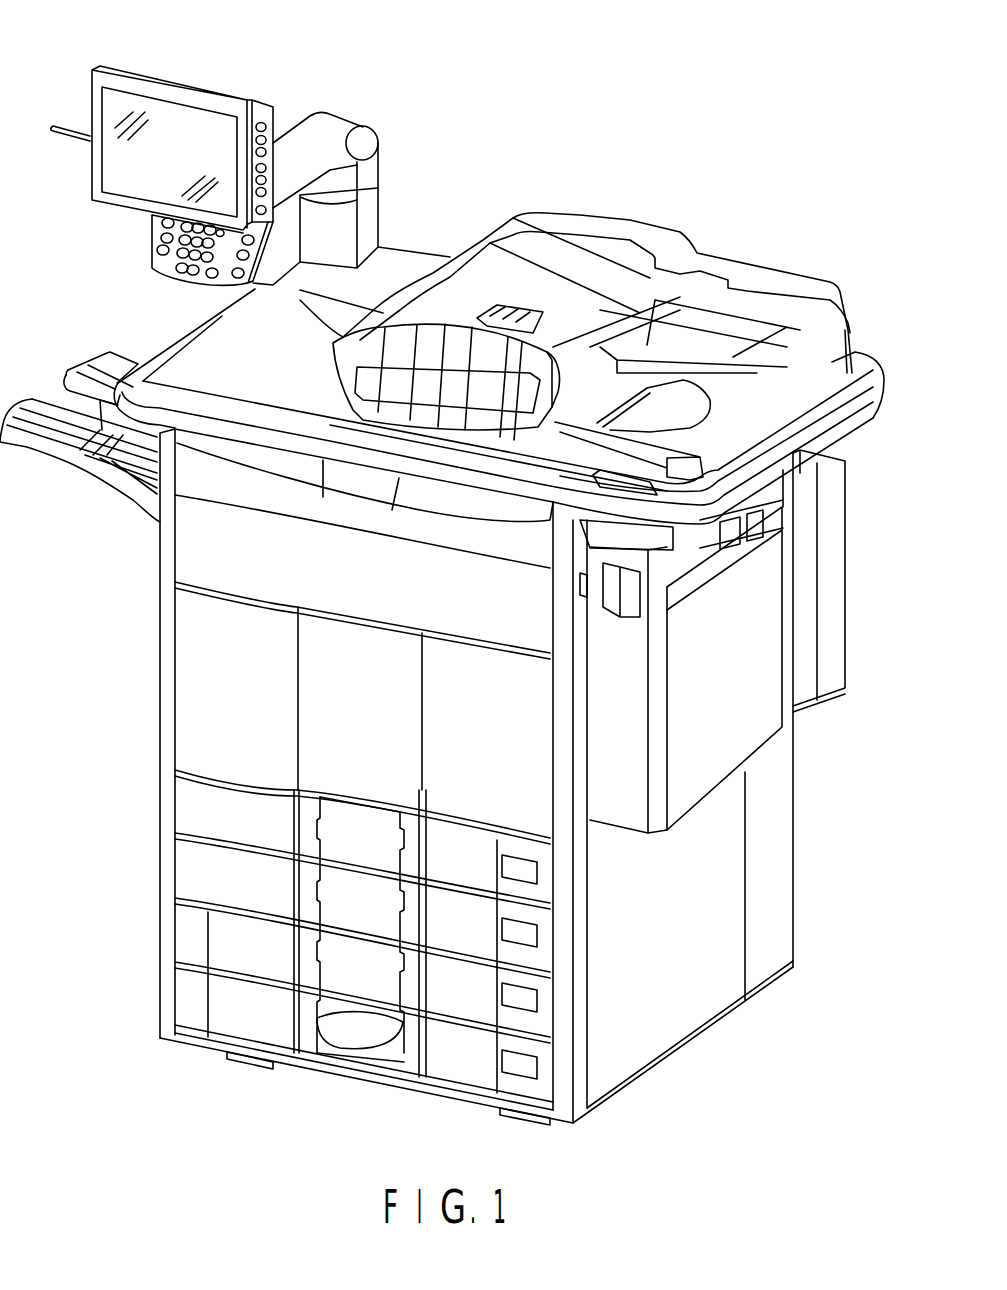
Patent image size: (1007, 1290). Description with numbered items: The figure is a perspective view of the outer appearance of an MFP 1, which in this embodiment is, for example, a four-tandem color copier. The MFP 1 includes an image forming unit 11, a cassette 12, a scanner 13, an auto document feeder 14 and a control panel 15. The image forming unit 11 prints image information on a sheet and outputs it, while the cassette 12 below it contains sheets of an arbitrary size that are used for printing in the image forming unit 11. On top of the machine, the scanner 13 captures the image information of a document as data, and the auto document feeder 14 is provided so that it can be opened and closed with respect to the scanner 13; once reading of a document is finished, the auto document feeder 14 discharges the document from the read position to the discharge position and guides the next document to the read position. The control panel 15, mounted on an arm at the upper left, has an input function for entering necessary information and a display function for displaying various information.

The MFP 1 is at (619, 124).
The image forming unit 11 is at (205, 713).
The cassette 12 is at (205, 873).
The scanner 13 is at (875, 363).
The auto document feeder 14 is at (637, 240).
The control panel 15 is at (185, 82).